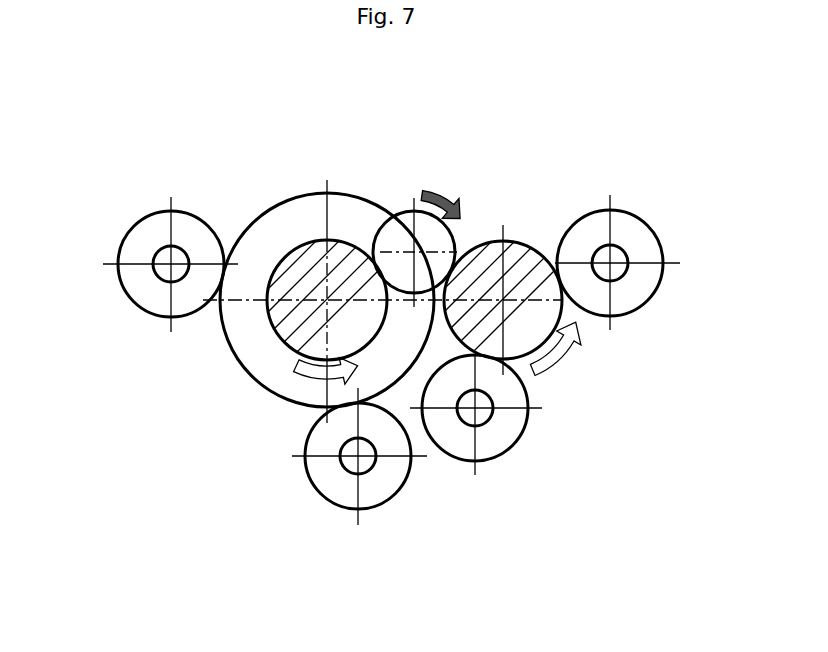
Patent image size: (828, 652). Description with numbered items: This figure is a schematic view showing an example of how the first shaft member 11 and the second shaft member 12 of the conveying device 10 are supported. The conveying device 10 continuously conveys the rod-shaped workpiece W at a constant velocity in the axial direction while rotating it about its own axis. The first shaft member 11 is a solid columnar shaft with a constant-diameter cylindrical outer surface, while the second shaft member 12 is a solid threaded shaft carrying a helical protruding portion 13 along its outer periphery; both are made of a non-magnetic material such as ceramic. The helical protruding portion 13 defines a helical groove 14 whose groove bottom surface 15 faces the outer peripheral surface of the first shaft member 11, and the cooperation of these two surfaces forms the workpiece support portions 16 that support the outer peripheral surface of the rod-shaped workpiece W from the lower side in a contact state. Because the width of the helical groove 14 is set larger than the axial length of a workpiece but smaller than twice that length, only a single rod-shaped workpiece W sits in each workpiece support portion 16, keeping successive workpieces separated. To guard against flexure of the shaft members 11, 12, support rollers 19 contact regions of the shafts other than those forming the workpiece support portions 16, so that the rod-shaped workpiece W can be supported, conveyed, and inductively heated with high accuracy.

The conveying device 10 is at (592, 157).
The first shaft member 11 is at (517, 252).
The second shaft member 12 is at (237, 358).
The helical protruding portion 13 is at (363, 283).
The helical groove 14 is at (315, 300).
The groove bottom surface 15 is at (283, 343).
The workpiece support portion 16 is at (462, 242).
The support roller 19 is at (143, 240).
The rod-shaped workpiece W is at (407, 228).